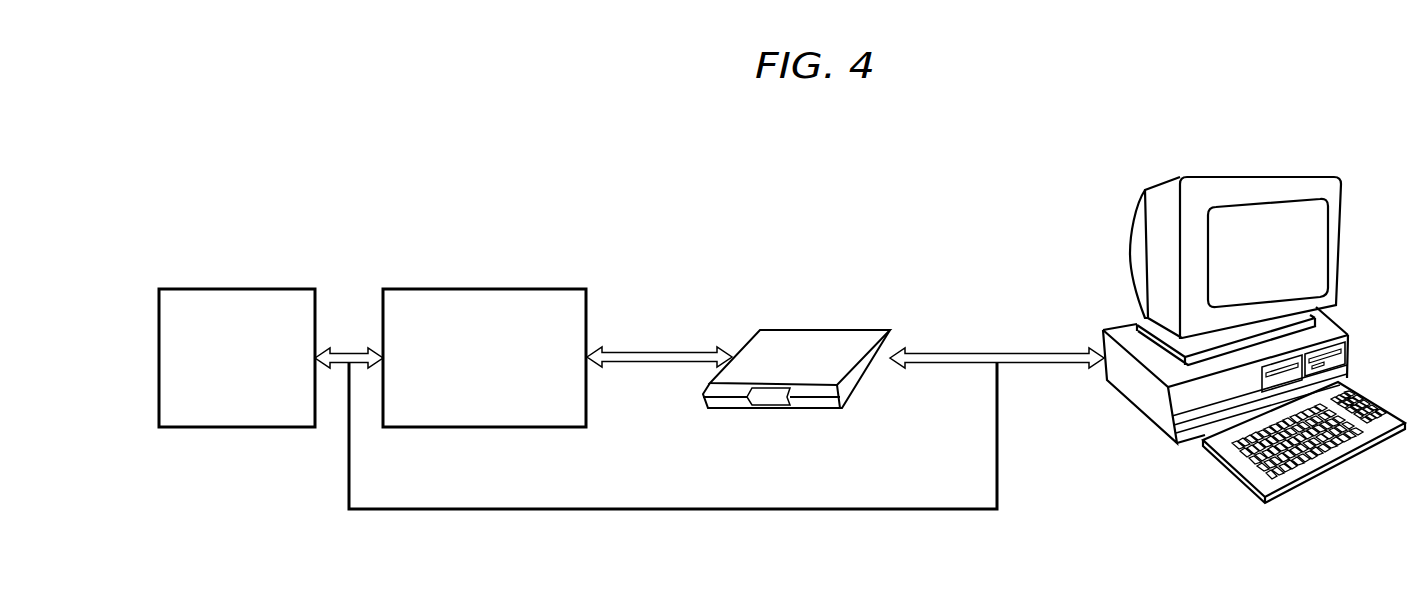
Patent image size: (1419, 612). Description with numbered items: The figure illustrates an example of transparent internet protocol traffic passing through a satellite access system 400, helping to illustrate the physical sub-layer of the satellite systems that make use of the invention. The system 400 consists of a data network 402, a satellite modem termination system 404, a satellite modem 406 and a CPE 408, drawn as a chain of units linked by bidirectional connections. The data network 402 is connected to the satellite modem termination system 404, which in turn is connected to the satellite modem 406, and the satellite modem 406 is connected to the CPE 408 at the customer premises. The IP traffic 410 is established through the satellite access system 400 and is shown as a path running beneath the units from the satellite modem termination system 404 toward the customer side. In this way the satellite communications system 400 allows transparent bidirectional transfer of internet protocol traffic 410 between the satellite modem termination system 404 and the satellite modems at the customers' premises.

The satellite access system 400 is at (1046, 133).
The data network 402 is at (284, 289).
The satellite modem termination system 404 is at (558, 289).
The satellite modem 406 is at (848, 330).
The CPE 408 is at (1260, 177).
The IP traffic 410 is at (607, 510).